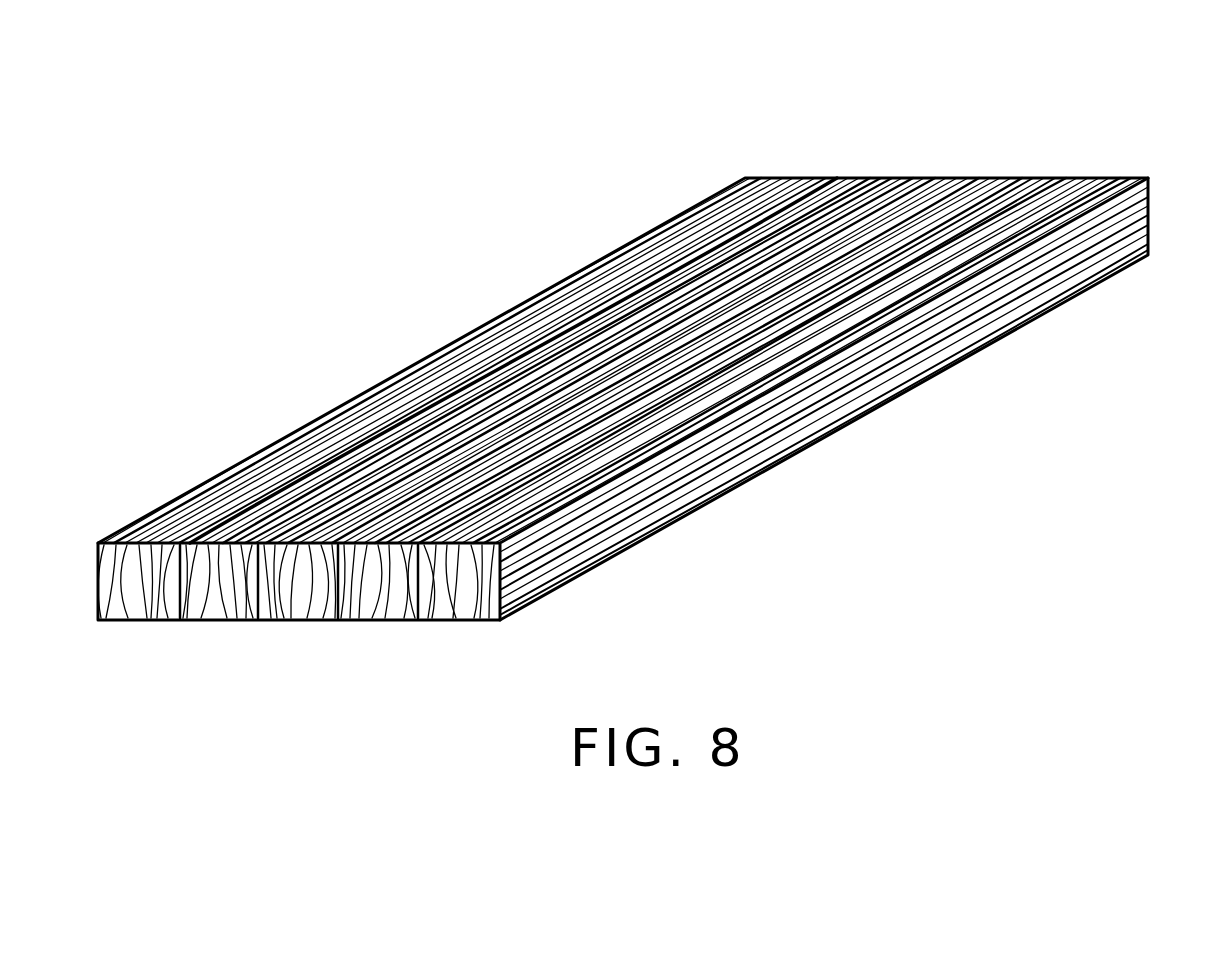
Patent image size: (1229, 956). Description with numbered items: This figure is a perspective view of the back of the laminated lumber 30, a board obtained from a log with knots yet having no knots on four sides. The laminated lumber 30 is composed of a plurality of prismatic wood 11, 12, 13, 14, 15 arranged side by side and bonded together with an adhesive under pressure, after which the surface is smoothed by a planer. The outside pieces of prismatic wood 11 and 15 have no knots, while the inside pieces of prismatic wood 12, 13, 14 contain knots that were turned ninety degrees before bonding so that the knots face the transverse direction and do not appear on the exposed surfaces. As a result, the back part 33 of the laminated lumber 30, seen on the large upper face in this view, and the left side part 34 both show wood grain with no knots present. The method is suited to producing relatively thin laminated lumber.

The laminated lumber 30 is at (530, 106).
The prismatic wood 11 is at (1106, 190).
The prismatic wood 12 is at (1020, 182).
The prismatic wood 13 is at (938, 184).
The prismatic wood 14 is at (856, 186).
The prismatic wood 15 is at (786, 178).
The back part 33 is at (520, 408).
The left side part 34 is at (862, 390).